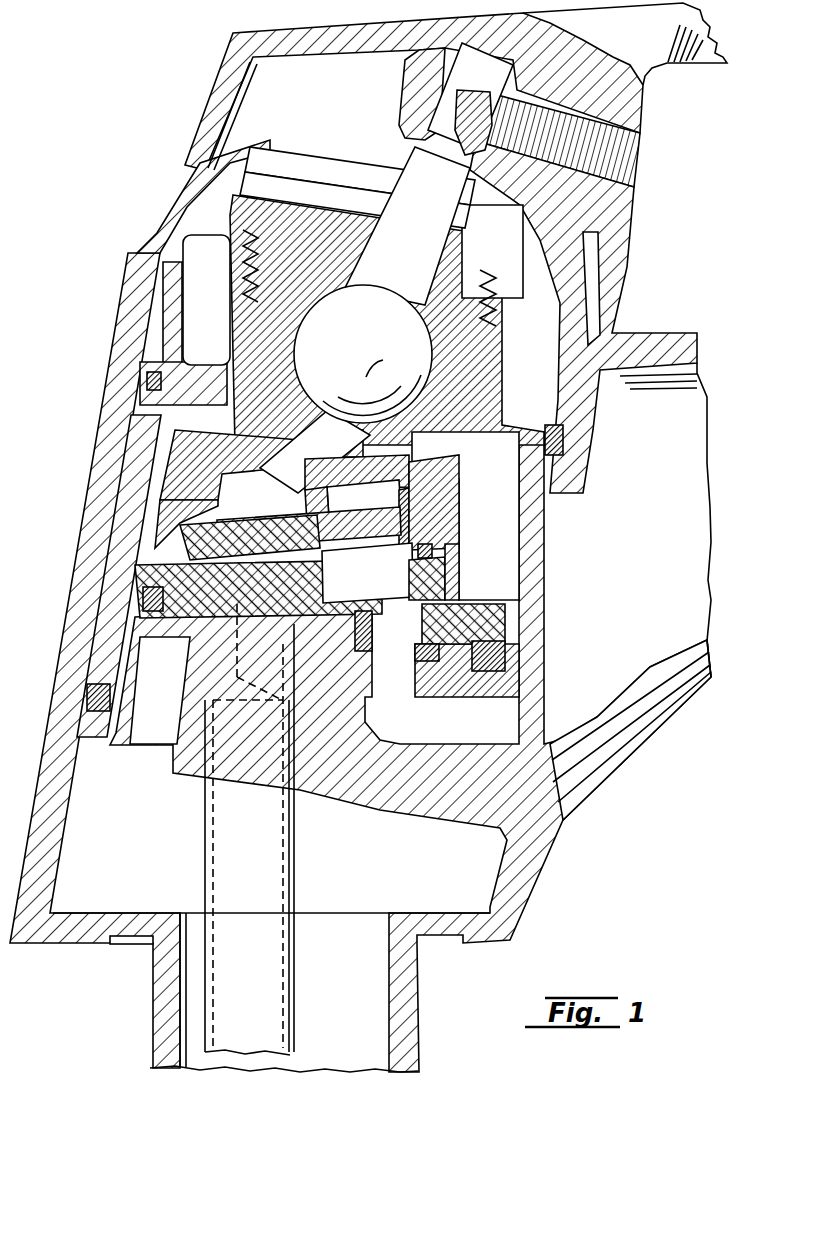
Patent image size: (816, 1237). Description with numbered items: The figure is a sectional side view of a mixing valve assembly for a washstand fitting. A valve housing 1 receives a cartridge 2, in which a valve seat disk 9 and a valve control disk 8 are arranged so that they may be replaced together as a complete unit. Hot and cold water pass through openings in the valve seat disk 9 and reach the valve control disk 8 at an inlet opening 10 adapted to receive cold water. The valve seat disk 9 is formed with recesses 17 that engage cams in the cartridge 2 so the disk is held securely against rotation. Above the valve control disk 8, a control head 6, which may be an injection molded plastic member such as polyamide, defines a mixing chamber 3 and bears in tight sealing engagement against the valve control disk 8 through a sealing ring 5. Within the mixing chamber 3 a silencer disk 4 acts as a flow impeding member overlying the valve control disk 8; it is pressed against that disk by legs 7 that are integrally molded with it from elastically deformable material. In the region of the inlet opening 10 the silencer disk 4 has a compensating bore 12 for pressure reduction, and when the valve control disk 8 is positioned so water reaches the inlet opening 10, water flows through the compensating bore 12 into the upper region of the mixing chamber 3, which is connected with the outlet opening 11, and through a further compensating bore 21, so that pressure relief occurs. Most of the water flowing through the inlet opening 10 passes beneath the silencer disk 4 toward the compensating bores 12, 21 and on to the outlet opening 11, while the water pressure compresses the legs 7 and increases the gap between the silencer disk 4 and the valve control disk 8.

The valve housing 1 is at (127, 354).
The cartridge 2 is at (137, 473).
The mixing chamber 3 is at (255, 498).
The silencer disk 4 is at (235, 520).
The sealing ring 5 is at (432, 552).
The control head 6 is at (440, 495).
The legs 7 is at (412, 525).
The valve control disk 8 is at (446, 585).
The valve seat disk 9 is at (530, 645).
The inlet opening 10 is at (247, 547).
The outlet opening 11 is at (367, 573).
The compensating bore 12 is at (309, 527).
The recesses 17 is at (97, 571).
The compensating bore 21 is at (372, 532).